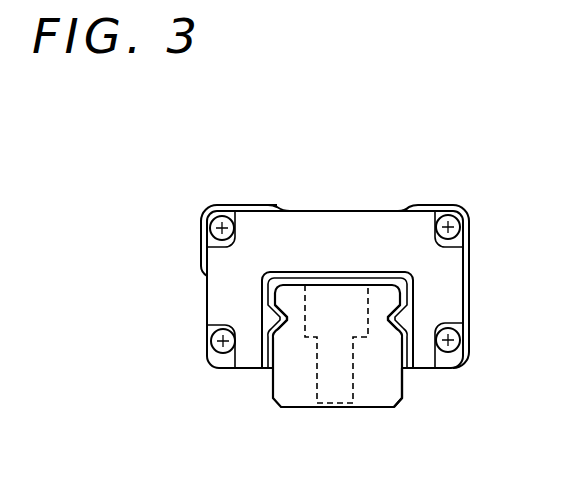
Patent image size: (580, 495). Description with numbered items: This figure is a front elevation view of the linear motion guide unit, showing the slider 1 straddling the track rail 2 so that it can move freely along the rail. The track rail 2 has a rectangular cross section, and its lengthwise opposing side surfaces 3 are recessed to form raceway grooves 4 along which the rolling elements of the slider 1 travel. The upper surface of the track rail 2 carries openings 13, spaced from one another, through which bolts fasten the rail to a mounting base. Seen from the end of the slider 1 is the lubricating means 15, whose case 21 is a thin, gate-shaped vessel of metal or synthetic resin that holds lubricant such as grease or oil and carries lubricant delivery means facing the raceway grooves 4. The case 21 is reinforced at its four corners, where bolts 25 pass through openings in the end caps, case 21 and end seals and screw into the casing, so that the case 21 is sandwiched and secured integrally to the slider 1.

The slider 1 is at (357, 193).
The track rail 2 is at (295, 387).
The lengthwise side surfaces 3 is at (399, 372).
The raceway grooves 4 is at (407, 323).
The openings 13 is at (351, 364).
The lubricating means 15 is at (284, 200).
The case 21 is at (407, 225).
The bolts 25 is at (213, 206).